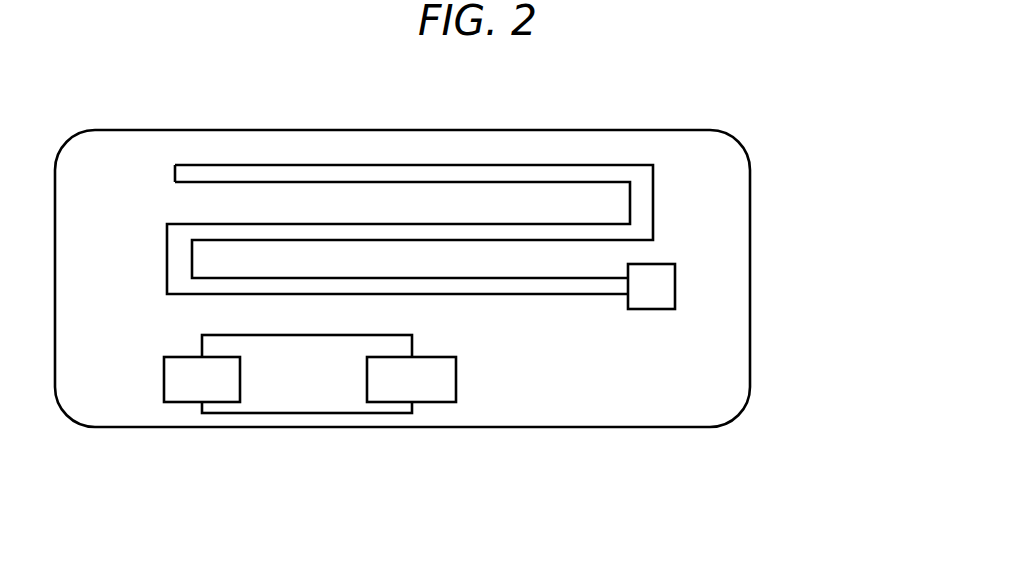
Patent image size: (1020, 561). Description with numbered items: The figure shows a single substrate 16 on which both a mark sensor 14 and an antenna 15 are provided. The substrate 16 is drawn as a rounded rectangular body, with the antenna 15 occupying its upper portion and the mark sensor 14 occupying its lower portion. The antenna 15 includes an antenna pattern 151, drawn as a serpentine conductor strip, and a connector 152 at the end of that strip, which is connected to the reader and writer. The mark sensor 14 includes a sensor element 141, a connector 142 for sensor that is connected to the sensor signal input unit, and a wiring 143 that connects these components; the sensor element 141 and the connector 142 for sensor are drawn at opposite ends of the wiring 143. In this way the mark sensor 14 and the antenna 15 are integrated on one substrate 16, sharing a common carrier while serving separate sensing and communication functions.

The mark sensor 14 is at (310, 442).
The sensor element 141 is at (411, 429).
The connector for sensor 142 is at (183, 390).
The wiring 143 is at (303, 415).
The antenna 15 is at (532, 237).
The antenna pattern 151 is at (653, 203).
The connector 152 is at (675, 280).
The substrate 16 is at (688, 126).